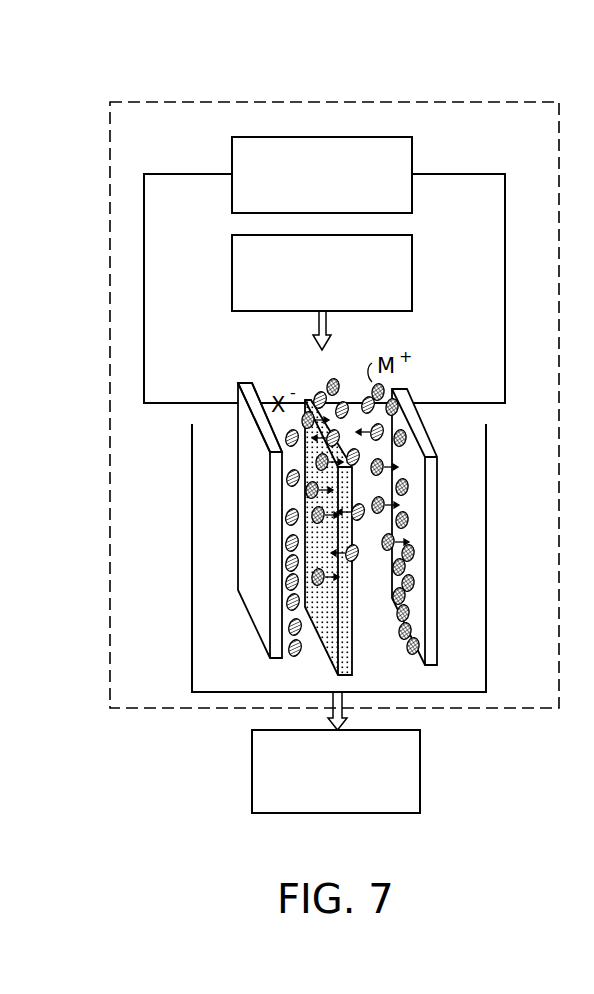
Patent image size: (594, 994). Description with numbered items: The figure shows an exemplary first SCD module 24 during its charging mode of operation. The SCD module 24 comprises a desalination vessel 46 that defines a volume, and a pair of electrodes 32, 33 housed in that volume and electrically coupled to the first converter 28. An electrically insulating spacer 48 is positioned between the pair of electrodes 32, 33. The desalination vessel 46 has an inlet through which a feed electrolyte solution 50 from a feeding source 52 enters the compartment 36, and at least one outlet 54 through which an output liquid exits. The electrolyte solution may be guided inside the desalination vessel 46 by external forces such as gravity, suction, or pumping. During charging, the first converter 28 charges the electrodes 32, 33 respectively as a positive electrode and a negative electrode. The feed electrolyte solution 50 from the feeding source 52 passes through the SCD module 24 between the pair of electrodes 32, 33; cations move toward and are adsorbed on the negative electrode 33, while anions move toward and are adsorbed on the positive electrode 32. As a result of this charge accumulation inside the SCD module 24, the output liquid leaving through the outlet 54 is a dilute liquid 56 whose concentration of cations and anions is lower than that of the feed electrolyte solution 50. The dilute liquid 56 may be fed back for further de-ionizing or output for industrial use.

The first SCD module 24 is at (290, 102).
The first converter 28 is at (412, 160).
The feeding source 52 is at (412, 278).
The feed electrolyte solution 50 is at (327, 317).
The desalination vessel 46 is at (192, 563).
The positive electrode 32 is at (243, 562).
The compartment 36 is at (266, 390).
The negative electrode 33 is at (430, 563).
The electrically insulating spacer 48 is at (308, 400).
The outlet 54 is at (333, 697).
The dilute liquid 56 is at (252, 793).